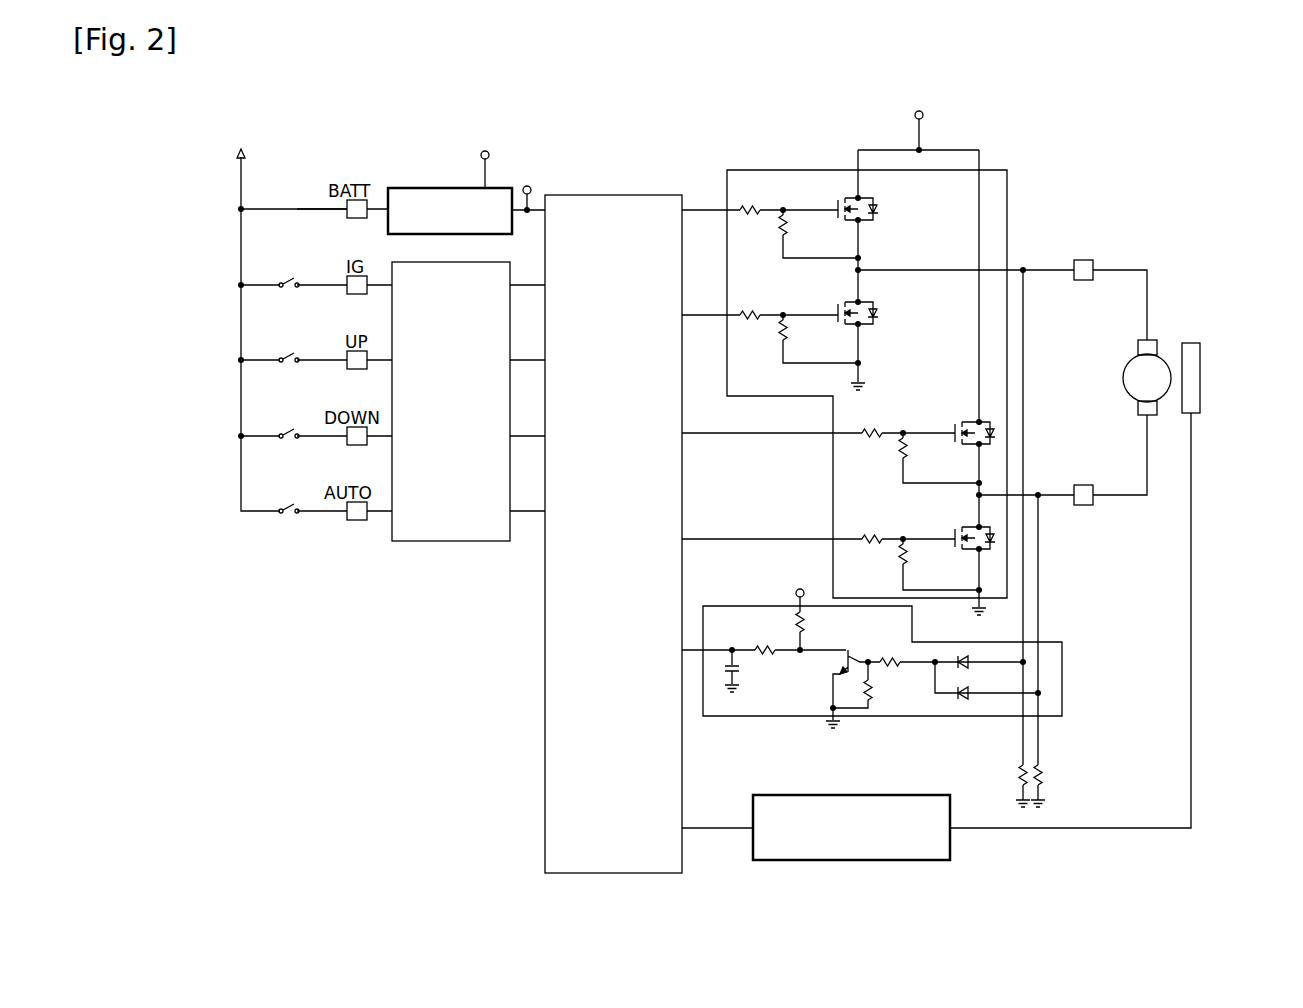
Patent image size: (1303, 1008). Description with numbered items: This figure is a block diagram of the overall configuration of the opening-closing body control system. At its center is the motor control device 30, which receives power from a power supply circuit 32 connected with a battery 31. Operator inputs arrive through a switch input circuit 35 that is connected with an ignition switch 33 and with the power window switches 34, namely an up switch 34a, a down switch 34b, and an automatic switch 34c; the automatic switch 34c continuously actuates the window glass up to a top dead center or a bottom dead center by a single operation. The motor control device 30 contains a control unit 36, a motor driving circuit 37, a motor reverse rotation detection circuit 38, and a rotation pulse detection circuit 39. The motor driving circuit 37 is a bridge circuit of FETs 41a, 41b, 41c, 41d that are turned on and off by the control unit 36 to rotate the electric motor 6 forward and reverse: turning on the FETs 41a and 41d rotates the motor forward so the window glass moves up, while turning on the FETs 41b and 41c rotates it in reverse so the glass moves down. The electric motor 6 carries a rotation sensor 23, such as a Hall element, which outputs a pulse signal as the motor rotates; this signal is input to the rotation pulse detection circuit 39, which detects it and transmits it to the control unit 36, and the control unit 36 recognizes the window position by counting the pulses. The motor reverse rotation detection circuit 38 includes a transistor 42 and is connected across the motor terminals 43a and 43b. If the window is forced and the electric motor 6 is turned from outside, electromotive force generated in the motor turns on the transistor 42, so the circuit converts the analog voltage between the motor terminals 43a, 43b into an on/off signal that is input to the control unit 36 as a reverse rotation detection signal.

The battery 31 is at (236, 154).
The power supply circuit 32 is at (410, 186).
The ignition switch 33 is at (290, 276).
The power window switches 34 is at (328, 411).
The up switch 34a is at (290, 352).
The down switch 34b is at (290, 428).
The automatic switch 34c is at (290, 503).
The switch input circuit 35 is at (447, 541).
The motor control device 30 is at (672, 171).
The control unit 36 is at (567, 722).
The motor driving circuit 37 is at (844, 350).
The FET 41a is at (882, 218).
The FET 41b is at (882, 324).
The FET 41c is at (948, 431).
The FET 41d is at (948, 536).
The transistor 42 is at (855, 657).
The motor reverse rotation detection circuit 38 is at (872, 688).
The rotation pulse detection circuit 39 is at (893, 862).
The motor terminal 43a is at (1085, 260).
The motor terminal 43b is at (1081, 505).
The electric motor 6 is at (1122, 381).
The rotation sensor 23 is at (1200, 380).